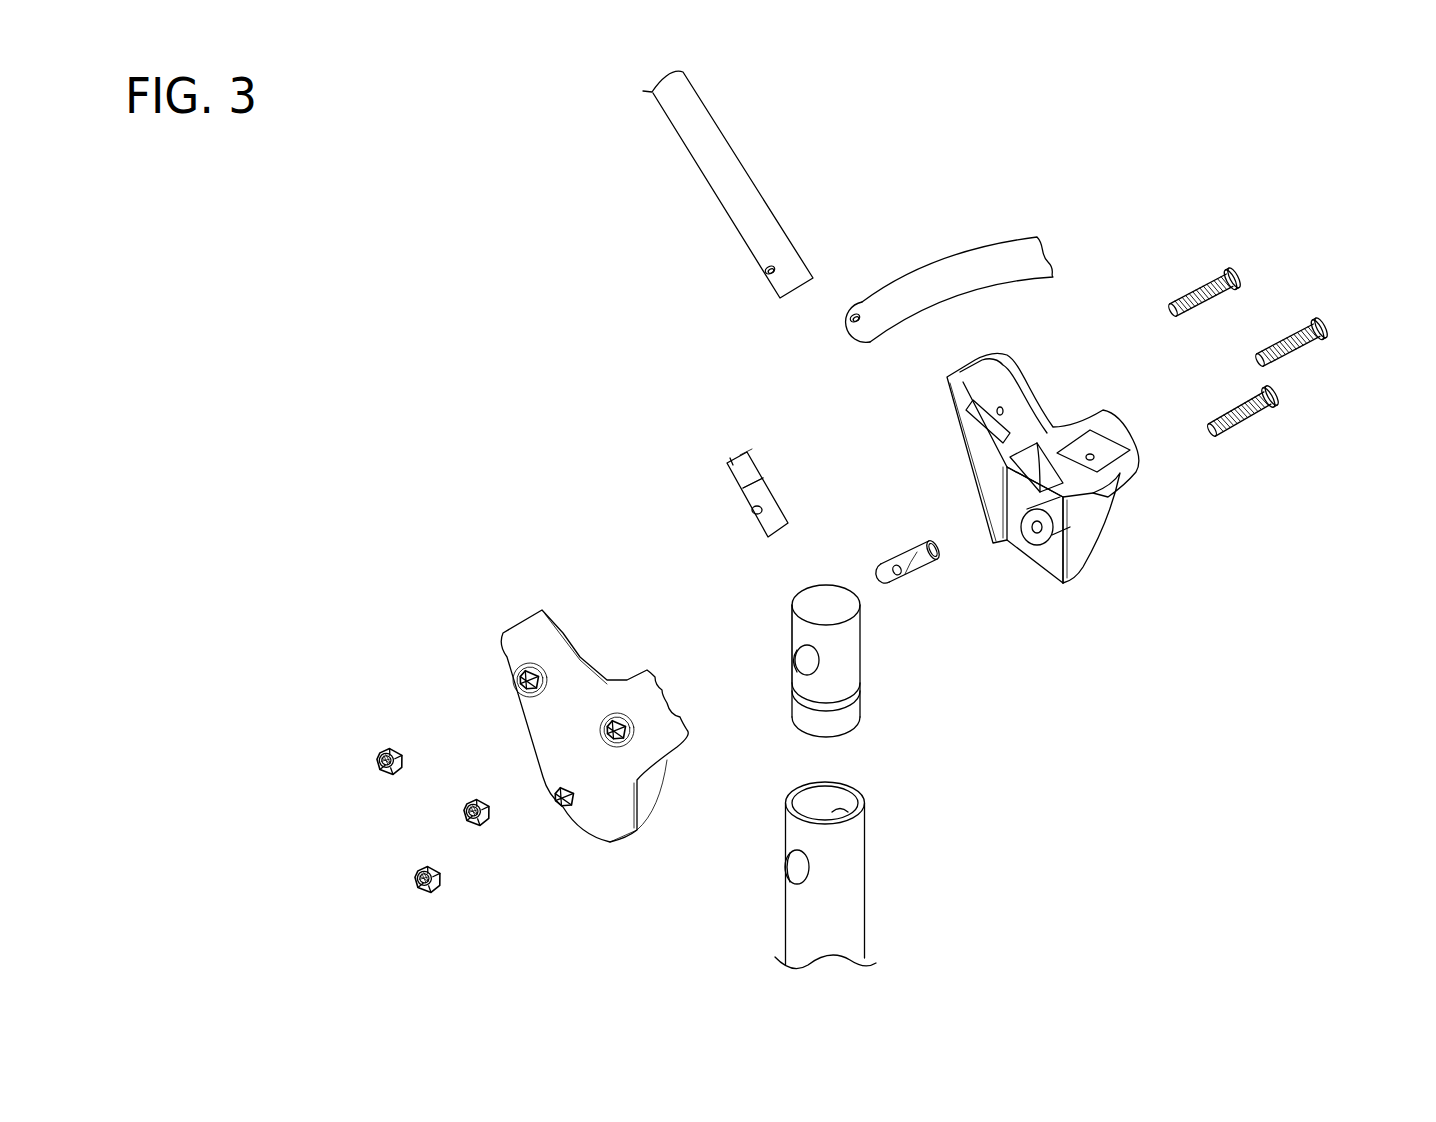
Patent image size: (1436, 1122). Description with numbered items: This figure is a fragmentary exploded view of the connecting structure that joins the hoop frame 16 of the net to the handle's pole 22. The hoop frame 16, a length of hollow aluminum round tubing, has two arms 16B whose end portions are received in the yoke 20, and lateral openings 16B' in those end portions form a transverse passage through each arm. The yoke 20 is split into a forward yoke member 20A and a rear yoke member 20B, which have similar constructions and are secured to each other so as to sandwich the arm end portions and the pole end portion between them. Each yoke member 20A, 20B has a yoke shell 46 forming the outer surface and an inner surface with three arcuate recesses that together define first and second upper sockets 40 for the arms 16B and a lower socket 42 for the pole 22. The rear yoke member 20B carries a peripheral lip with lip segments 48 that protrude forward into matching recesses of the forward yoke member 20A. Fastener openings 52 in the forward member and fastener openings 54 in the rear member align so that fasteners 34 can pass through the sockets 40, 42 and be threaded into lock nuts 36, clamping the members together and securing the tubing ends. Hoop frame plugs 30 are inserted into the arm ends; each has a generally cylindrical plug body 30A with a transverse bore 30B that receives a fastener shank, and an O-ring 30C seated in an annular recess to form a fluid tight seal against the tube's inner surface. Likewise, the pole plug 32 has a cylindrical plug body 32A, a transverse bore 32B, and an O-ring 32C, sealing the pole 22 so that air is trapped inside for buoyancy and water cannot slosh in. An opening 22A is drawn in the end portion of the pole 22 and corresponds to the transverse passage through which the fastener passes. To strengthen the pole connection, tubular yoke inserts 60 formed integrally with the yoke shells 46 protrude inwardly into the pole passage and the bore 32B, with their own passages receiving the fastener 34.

The hoop frame 16 is at (1018, 243).
The arms 16B is at (797, 184).
The lateral openings 16B' is at (784, 282).
The yoke 20 is at (1098, 347).
The forward yoke member 20A is at (577, 640).
The rear yoke member 20B is at (1027, 382).
The pole 22 is at (866, 882).
The leg tube hole 22A is at (789, 866).
The hoop frame plugs 30 is at (782, 500).
The plug body 30A is at (740, 456).
The transverse bore 30B is at (753, 510).
The O-rings 30C is at (743, 492).
The pole plug 32 is at (858, 664).
The plug body 32A is at (848, 642).
The transverse bore 32B is at (800, 666).
The O-ring 32C is at (848, 700).
The fasteners 34 is at (1228, 278).
The lock nuts 36 is at (381, 752).
The upper sockets 40 is at (973, 394).
The lower socket 42 is at (1012, 543).
The yoke shell 46 is at (992, 473).
The lip segments 48 is at (1033, 427).
The fastener openings 52 is at (520, 684).
The fastener openings 54 is at (997, 412).
The yoke inserts 60 is at (1053, 513).